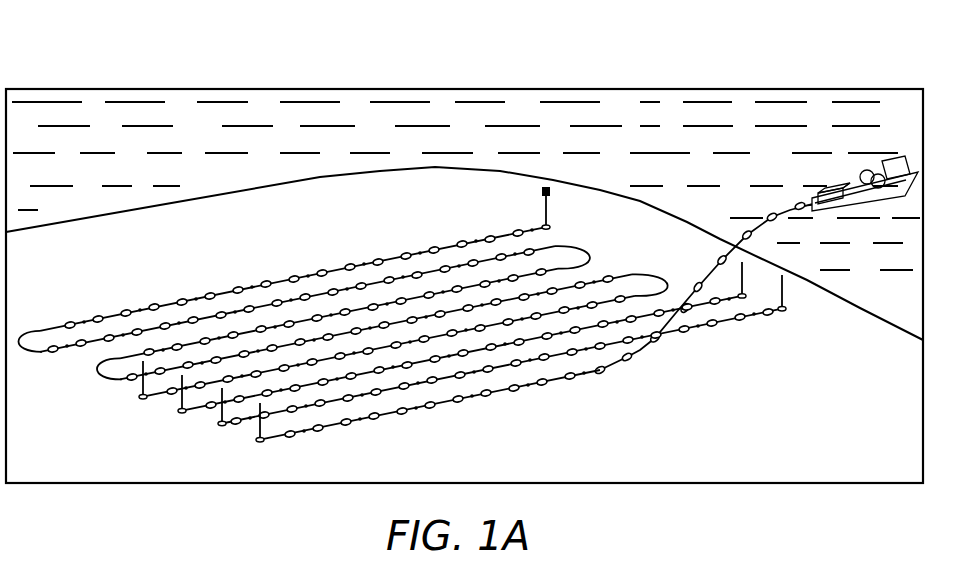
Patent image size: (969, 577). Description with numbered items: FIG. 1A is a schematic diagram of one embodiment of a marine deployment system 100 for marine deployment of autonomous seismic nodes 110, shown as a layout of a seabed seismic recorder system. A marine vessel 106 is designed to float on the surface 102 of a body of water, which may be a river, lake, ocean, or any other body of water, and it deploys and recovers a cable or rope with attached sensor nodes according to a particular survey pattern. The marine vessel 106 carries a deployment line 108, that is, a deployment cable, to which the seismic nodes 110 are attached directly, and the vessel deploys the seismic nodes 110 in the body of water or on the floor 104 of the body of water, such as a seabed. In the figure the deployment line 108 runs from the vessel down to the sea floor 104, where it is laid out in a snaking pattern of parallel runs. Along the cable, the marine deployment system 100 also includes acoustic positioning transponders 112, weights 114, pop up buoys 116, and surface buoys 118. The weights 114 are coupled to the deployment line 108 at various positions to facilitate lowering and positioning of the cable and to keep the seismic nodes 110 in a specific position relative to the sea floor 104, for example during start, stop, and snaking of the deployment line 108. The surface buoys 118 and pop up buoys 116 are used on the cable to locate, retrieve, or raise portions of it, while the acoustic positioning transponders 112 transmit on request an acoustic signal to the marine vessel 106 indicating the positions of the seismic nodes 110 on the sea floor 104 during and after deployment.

The marine deployment system 100 is at (115, 60).
The surface of a body of water 102 is at (735, 135).
The floor of the body of water 104 is at (375, 195).
The marine vessel 106 is at (884, 162).
The deployment line 108 is at (786, 210).
The seismic nodes 110 is at (455, 400).
The acoustic positioning transponders 112 is at (147, 308).
The weights 114 is at (100, 373).
The pop up buoys 116 is at (782, 277).
The surface buoys 118 is at (546, 192).